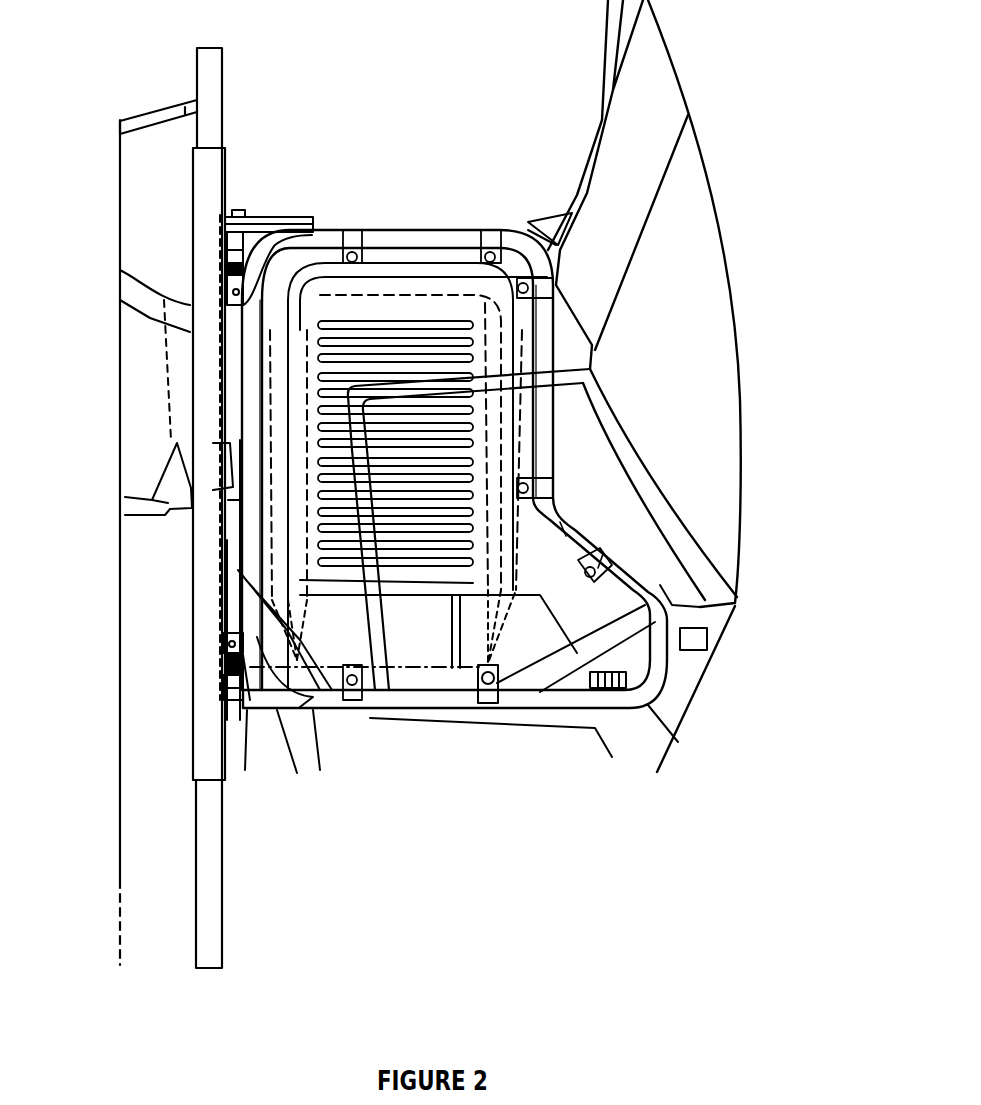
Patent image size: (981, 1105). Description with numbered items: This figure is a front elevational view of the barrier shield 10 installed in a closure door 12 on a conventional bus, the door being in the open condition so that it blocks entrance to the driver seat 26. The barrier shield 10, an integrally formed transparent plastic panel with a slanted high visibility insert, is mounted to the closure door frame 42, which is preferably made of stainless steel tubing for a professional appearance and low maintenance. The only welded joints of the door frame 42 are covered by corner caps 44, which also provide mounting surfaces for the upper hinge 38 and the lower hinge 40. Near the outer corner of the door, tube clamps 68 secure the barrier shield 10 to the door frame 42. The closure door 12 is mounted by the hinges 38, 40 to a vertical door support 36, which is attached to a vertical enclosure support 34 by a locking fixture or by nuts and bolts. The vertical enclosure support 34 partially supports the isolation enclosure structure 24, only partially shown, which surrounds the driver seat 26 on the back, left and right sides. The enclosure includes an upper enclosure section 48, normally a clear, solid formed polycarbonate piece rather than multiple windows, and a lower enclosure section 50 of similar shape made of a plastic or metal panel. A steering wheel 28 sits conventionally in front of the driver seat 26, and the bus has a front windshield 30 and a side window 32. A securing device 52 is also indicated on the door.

The barrier shield 10 is at (415, 313).
The closure door 12 is at (385, 214).
The isolation enclosure structure 24 is at (185, 755).
The driver seat 26 is at (307, 748).
The steering wheel 28 is at (730, 607).
The front windshield 30 is at (705, 355).
The side window 32 is at (437, 624).
The vertical enclosure support 34 is at (225, 62).
The vertical door support 36 is at (193, 205).
The upper hinge 38 is at (225, 263).
The lower hinge 40 is at (225, 660).
The closure door frame 42 is at (468, 233).
The corner caps 44 is at (270, 238).
The upper enclosure section 48 is at (185, 381).
The lower enclosure section 50 is at (178, 628).
The securing device 52 is at (620, 723).
The tube clamps 68 is at (488, 705).